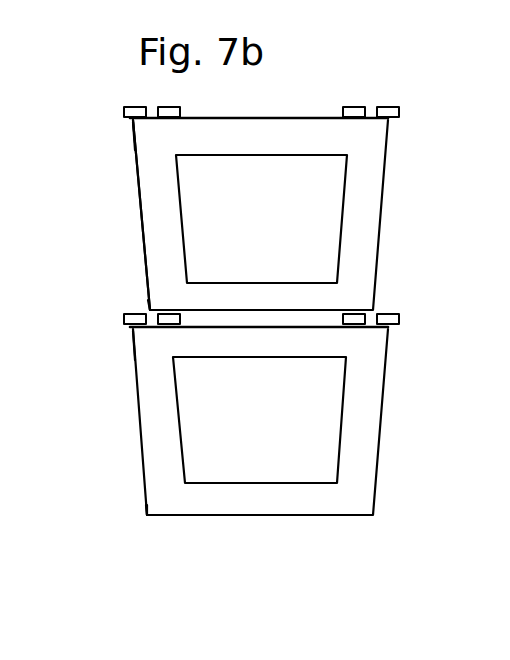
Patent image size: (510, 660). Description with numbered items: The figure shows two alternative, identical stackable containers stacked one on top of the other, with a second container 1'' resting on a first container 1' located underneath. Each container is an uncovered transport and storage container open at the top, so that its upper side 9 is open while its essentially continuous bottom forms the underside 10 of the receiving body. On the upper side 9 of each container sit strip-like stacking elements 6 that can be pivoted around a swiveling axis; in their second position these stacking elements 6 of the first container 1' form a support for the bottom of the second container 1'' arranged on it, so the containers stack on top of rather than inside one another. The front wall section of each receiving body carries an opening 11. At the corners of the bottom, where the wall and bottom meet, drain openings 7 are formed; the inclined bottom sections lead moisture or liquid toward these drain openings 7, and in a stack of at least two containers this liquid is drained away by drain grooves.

The second container 1'' is at (221, 214).
The first container 1' is at (223, 421).
The stacking element 6 is at (125, 111).
The drain opening 7 is at (148, 308).
The upper side 9 is at (112, 131).
The underside 10 is at (137, 305).
The opening 11 is at (343, 210).